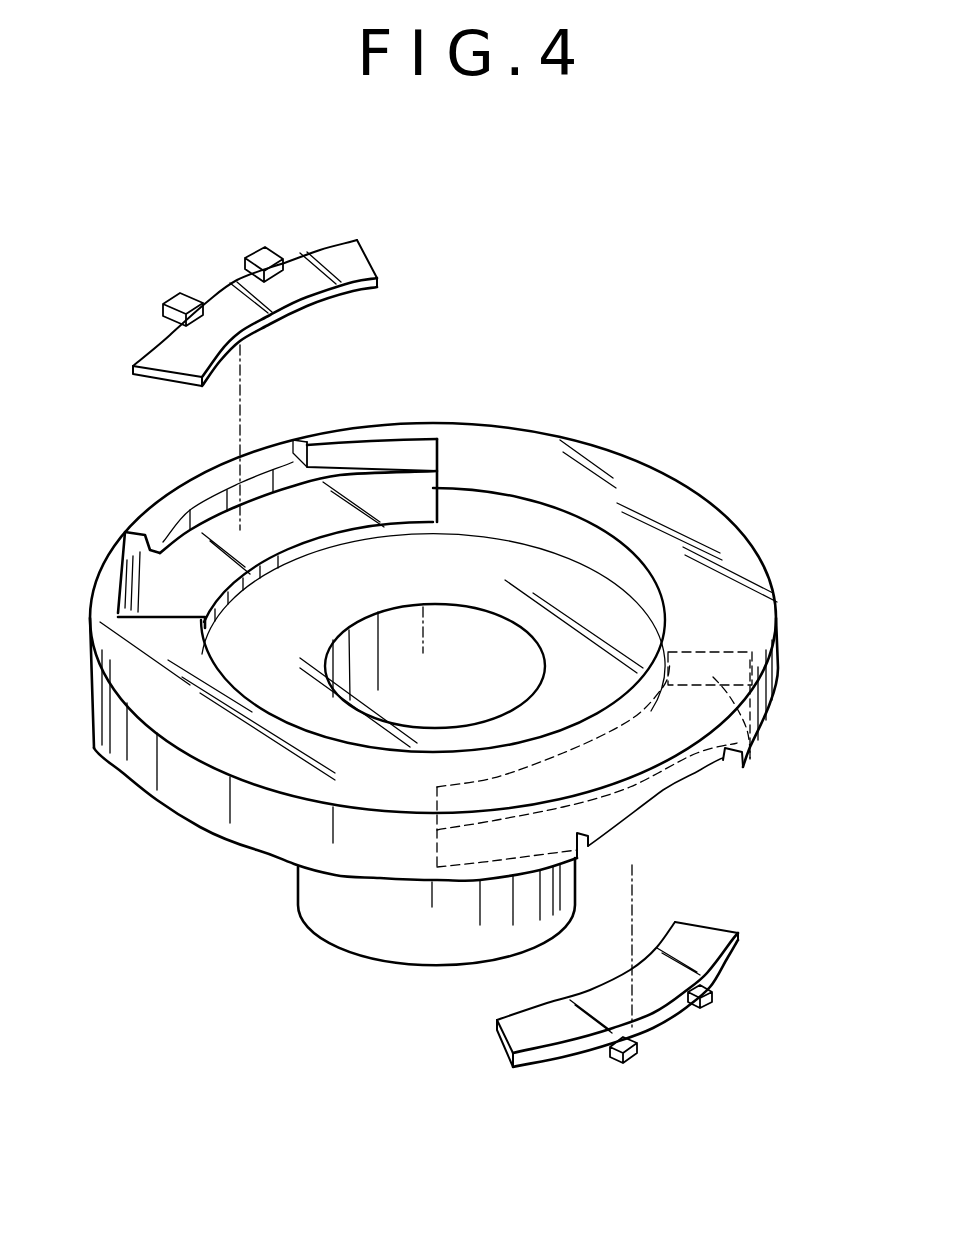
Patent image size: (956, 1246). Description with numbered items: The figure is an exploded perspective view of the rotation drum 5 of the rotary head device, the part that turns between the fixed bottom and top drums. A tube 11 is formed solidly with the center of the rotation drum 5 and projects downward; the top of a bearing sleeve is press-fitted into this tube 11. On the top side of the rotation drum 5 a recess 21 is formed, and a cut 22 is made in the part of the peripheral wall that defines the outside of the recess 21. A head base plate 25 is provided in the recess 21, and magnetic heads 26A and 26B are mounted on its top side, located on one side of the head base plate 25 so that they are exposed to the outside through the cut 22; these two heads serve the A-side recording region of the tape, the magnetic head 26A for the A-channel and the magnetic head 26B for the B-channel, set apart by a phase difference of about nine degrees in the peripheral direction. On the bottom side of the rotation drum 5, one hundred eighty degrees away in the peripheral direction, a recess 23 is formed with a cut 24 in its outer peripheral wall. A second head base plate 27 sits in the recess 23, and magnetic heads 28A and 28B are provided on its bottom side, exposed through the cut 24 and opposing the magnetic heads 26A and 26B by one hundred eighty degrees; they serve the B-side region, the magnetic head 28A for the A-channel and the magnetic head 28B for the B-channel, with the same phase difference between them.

The rotation drum 5 is at (776, 585).
The tube 11 is at (327, 907).
The recess 21 is at (190, 565).
The cut 22 is at (282, 465).
The recess 23 is at (752, 700).
The cut 24 is at (732, 770).
The head base plate 25 is at (362, 262).
The magnetic head 26A is at (252, 250).
The magnetic head 26B is at (170, 302).
The second head base plate 27 is at (707, 934).
The magnetic head 28A is at (633, 1060).
The magnetic head 28B is at (705, 1005).